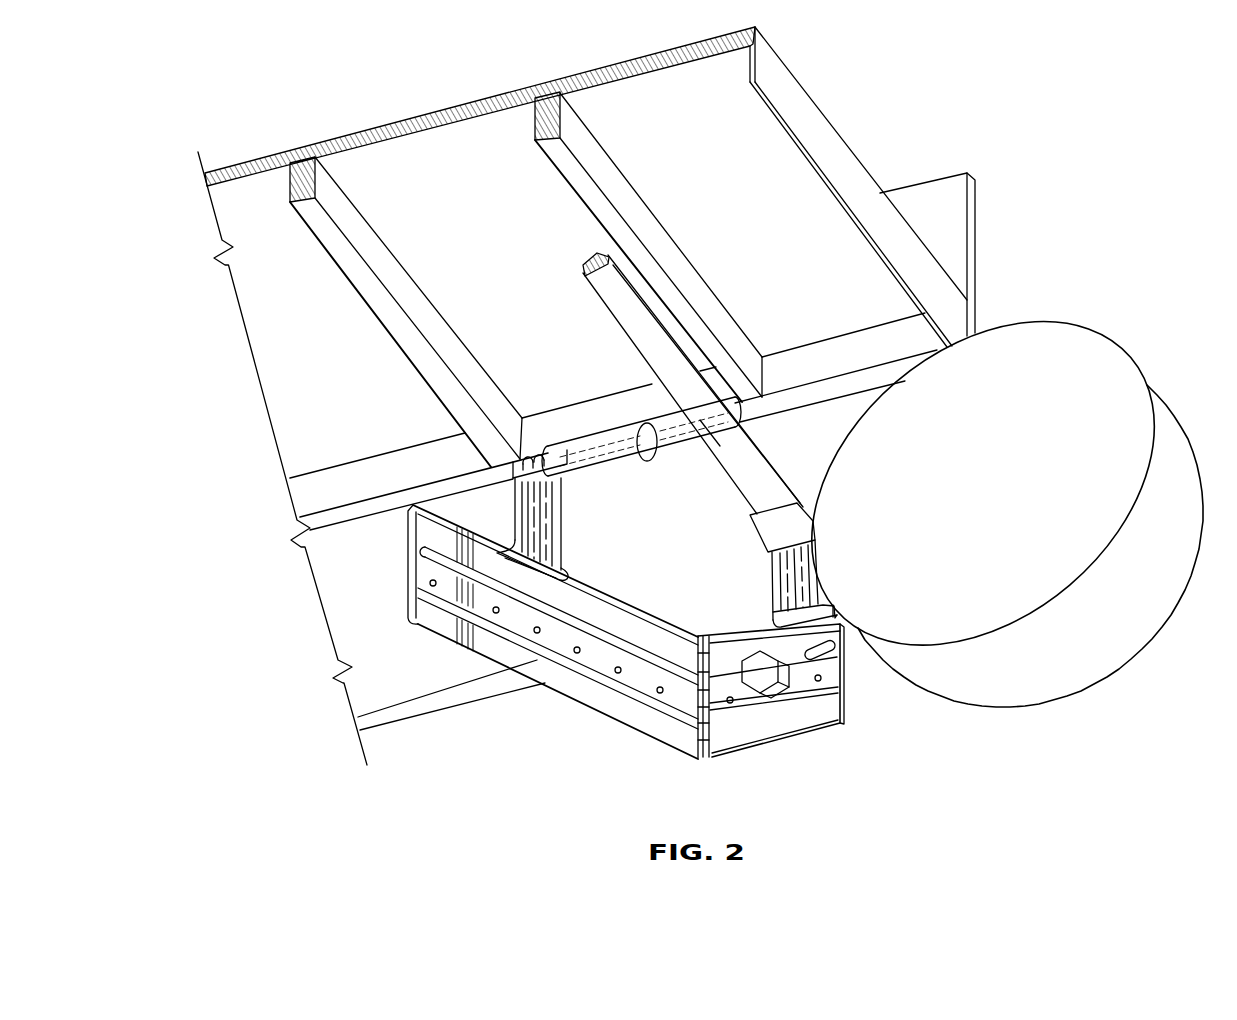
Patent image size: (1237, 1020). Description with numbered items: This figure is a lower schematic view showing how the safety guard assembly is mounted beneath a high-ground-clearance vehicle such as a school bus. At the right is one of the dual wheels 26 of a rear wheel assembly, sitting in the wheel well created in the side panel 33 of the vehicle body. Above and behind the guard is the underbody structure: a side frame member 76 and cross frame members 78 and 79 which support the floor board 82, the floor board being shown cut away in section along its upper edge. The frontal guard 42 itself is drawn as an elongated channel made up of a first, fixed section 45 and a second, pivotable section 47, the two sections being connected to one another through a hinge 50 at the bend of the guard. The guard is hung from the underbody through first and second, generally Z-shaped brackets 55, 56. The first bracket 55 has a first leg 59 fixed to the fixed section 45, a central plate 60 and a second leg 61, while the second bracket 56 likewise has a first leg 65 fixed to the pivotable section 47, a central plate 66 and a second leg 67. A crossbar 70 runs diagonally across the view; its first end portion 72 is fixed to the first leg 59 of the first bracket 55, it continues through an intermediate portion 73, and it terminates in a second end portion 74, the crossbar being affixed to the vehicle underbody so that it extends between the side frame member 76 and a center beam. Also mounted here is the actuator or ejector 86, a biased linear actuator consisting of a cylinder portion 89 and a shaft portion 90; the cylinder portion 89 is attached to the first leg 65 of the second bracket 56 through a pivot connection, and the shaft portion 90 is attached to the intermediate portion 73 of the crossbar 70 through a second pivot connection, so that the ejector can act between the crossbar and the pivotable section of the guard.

The dual wheel 26 is at (1112, 627).
The side panel 33 is at (977, 203).
The frontal guard 42 is at (634, 652).
The first, fixed section 45 is at (797, 720).
The second, pivotable section 47 is at (537, 662).
The hinge 50 is at (704, 760).
The first bracket 55 is at (796, 565).
The second bracket 56 is at (583, 519).
The first leg 59 is at (778, 530).
The central plate 60 is at (823, 574).
The second leg 61 is at (848, 620).
The first leg 65 is at (575, 487).
The central plate 66 is at (552, 546).
The second leg 67 is at (543, 570).
The crossbar 70 is at (676, 373).
The first end portion 72 is at (757, 441).
The intermediate portion 73 is at (717, 430).
The second end portion 74 is at (610, 288).
The side frame member 76 is at (820, 354).
The cross frame member 78 is at (630, 206).
The cross frame member 79 is at (392, 272).
The floor board 82 is at (651, 88).
The actuator or ejector 86 is at (472, 418).
The cylinder portion 89 is at (613, 440).
The shaft portion 90 is at (546, 456).